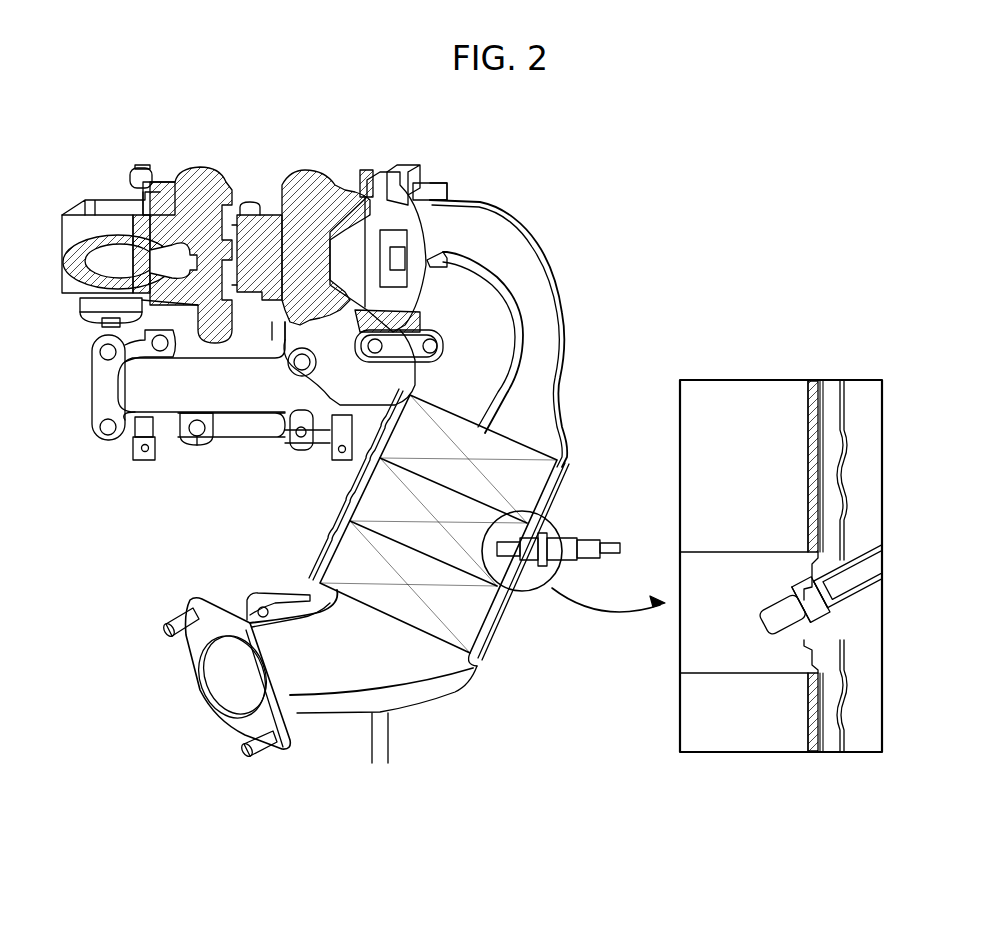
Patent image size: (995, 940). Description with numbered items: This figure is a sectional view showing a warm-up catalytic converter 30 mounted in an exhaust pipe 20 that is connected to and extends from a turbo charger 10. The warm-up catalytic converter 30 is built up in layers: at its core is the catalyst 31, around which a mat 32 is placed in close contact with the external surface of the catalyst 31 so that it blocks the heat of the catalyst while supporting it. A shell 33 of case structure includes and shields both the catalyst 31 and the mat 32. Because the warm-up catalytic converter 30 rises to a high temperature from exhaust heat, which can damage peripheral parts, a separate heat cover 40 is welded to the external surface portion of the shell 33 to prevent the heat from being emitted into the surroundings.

The turbo charger 10 is at (309, 186).
The exhaust pipe 20 is at (577, 361).
The warm-up catalytic converter 30 is at (533, 440).
The catalyst 31 is at (724, 397).
The mat 32 is at (815, 383).
The shell 33 is at (827, 390).
The heat cover 40 is at (843, 470).